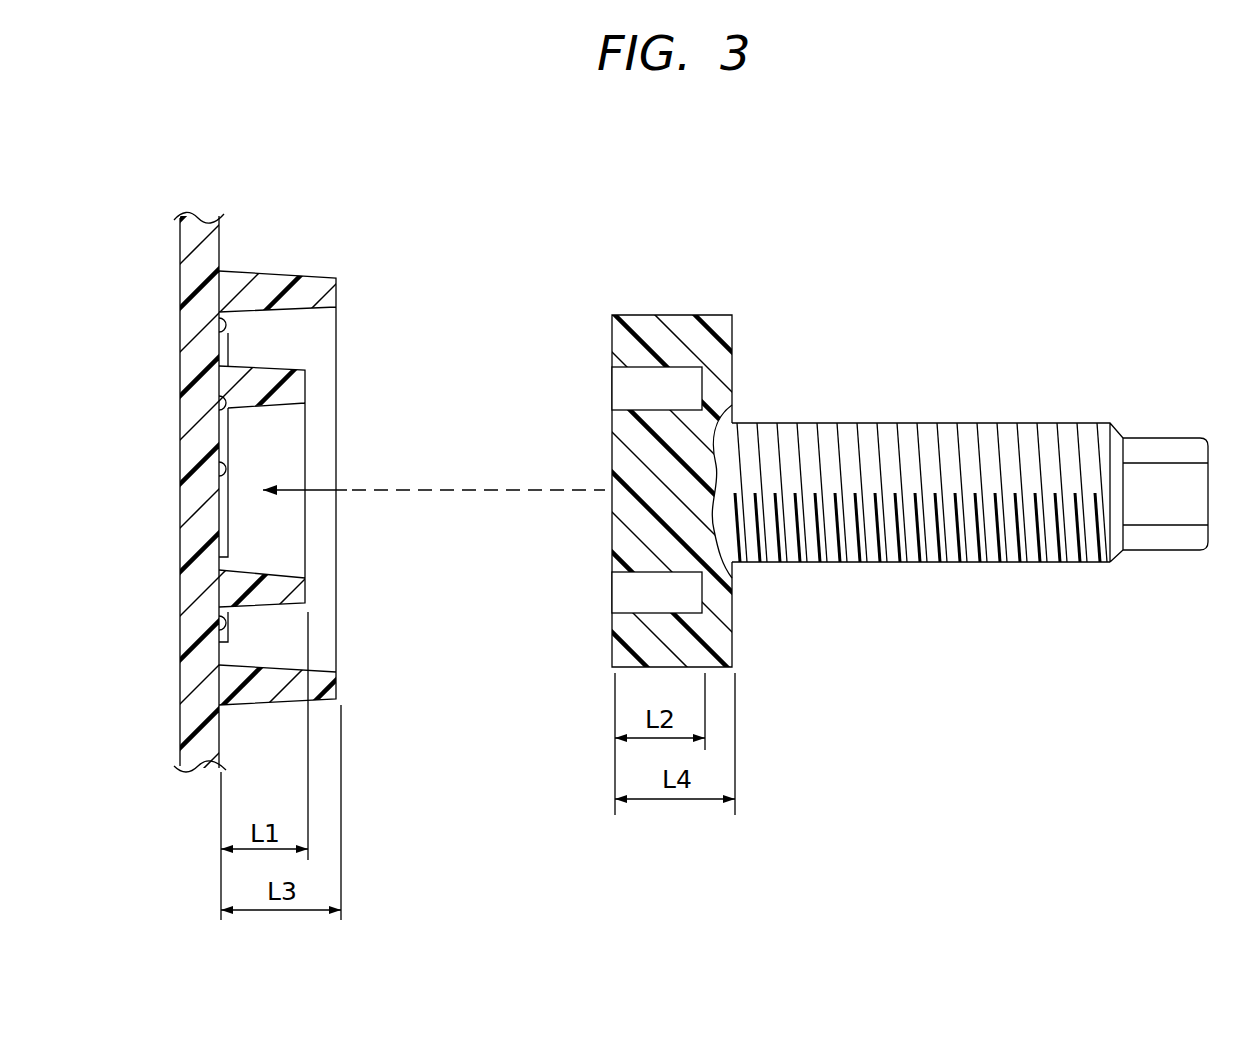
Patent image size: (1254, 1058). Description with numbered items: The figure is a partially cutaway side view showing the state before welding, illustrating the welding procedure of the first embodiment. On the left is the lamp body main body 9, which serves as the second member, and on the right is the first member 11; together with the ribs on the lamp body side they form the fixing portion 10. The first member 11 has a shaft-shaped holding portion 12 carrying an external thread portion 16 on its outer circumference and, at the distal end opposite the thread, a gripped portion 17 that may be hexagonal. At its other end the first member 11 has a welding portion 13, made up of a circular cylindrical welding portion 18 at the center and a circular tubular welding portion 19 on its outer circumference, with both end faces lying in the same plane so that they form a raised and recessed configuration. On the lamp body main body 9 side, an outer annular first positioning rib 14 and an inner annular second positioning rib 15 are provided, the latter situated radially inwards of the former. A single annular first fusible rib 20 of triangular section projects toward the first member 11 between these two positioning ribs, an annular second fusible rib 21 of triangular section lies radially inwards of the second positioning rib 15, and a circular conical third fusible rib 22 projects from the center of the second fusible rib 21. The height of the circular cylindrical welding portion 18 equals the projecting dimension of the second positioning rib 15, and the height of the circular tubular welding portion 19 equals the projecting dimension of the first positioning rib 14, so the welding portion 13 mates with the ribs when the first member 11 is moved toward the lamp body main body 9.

The lamp body main body 9 is at (230, 228).
The fixing portion 10 is at (724, 407).
The first member 11 is at (970, 486).
The holding portion 12 is at (935, 563).
The welding portion 13 is at (680, 469).
The first positioning rib 14 is at (430, 499).
The second positioning rib 15 is at (278, 369).
The external thread portion 16 is at (929, 422).
The gripped portion 17 is at (1165, 542).
The circular cylindrical welding portion 18 is at (618, 445).
The circular tubular welding portion 19 is at (618, 349).
The first fusible rib 20 is at (217, 324).
The second fusible rib 21 is at (221, 400).
The third fusible rib 22 is at (218, 468).